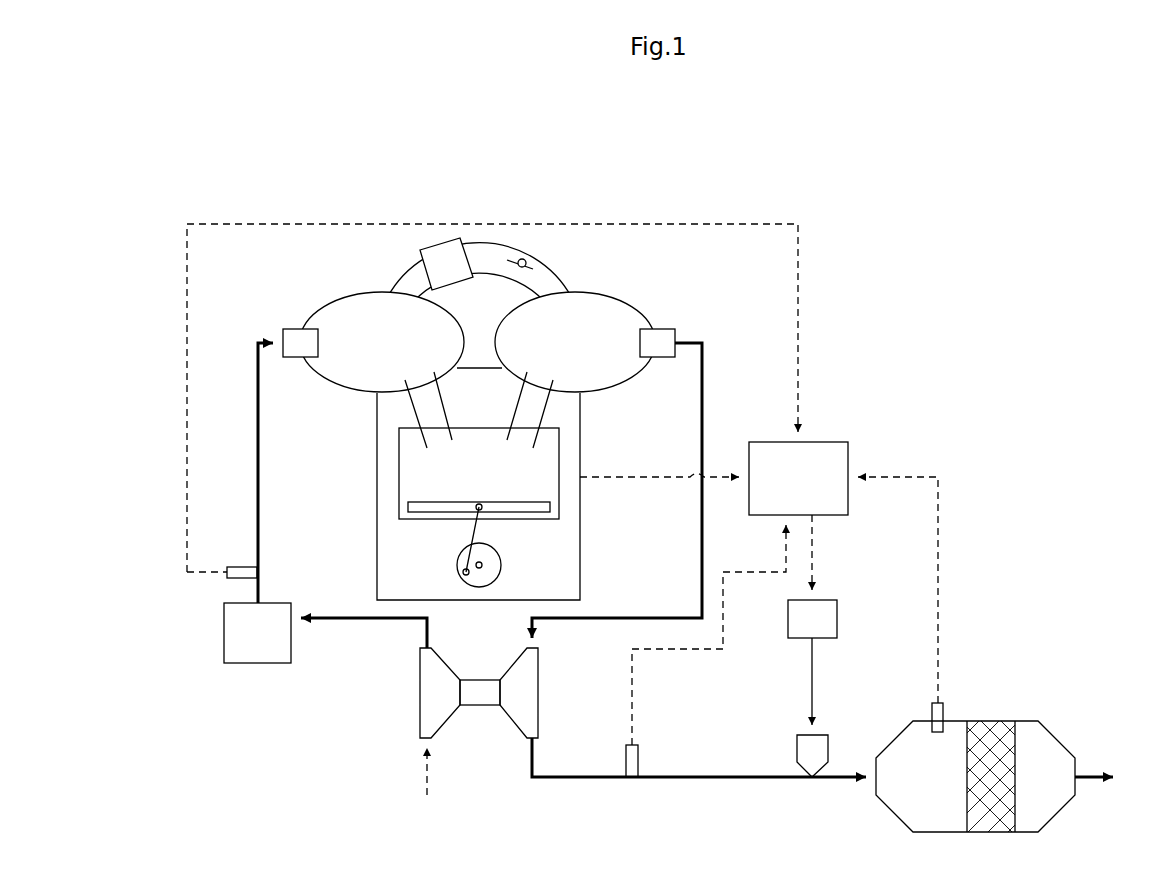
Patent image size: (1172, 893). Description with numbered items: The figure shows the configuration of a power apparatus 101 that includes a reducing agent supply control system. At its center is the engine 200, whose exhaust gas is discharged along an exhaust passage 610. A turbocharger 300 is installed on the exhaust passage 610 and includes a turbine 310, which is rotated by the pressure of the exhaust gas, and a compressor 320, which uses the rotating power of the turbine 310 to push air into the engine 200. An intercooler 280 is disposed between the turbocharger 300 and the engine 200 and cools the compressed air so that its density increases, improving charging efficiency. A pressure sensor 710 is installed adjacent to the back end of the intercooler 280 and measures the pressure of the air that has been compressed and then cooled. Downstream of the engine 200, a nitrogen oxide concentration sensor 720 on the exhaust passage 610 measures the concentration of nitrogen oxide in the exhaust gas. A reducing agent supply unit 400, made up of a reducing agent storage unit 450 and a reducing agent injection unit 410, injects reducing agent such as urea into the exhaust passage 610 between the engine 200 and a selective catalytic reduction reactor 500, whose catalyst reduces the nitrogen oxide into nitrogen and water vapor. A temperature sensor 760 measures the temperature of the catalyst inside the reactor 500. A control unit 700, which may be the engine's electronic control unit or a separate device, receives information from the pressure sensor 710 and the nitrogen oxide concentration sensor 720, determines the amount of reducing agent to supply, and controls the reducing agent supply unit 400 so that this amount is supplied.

The power apparatus 101 is at (862, 232).
The engine 200 is at (592, 421).
The intercooler 280 is at (250, 678).
The turbocharger 300 is at (479, 760).
The turbine 310 is at (522, 713).
The compressor 320 is at (437, 713).
The reducing agent supply unit 400 is at (751, 688).
The reducing agent injection unit 410 is at (805, 745).
The reducing agent storage unit 450 is at (802, 632).
The selective catalytic reduction reactor 500 is at (1052, 720).
The exhaust passage 610 is at (593, 620).
The control unit 700 is at (858, 452).
The pressure sensor 710 is at (238, 562).
The nitrogen oxide concentration sensor 720 is at (646, 757).
The temperature sensor 760 is at (950, 705).